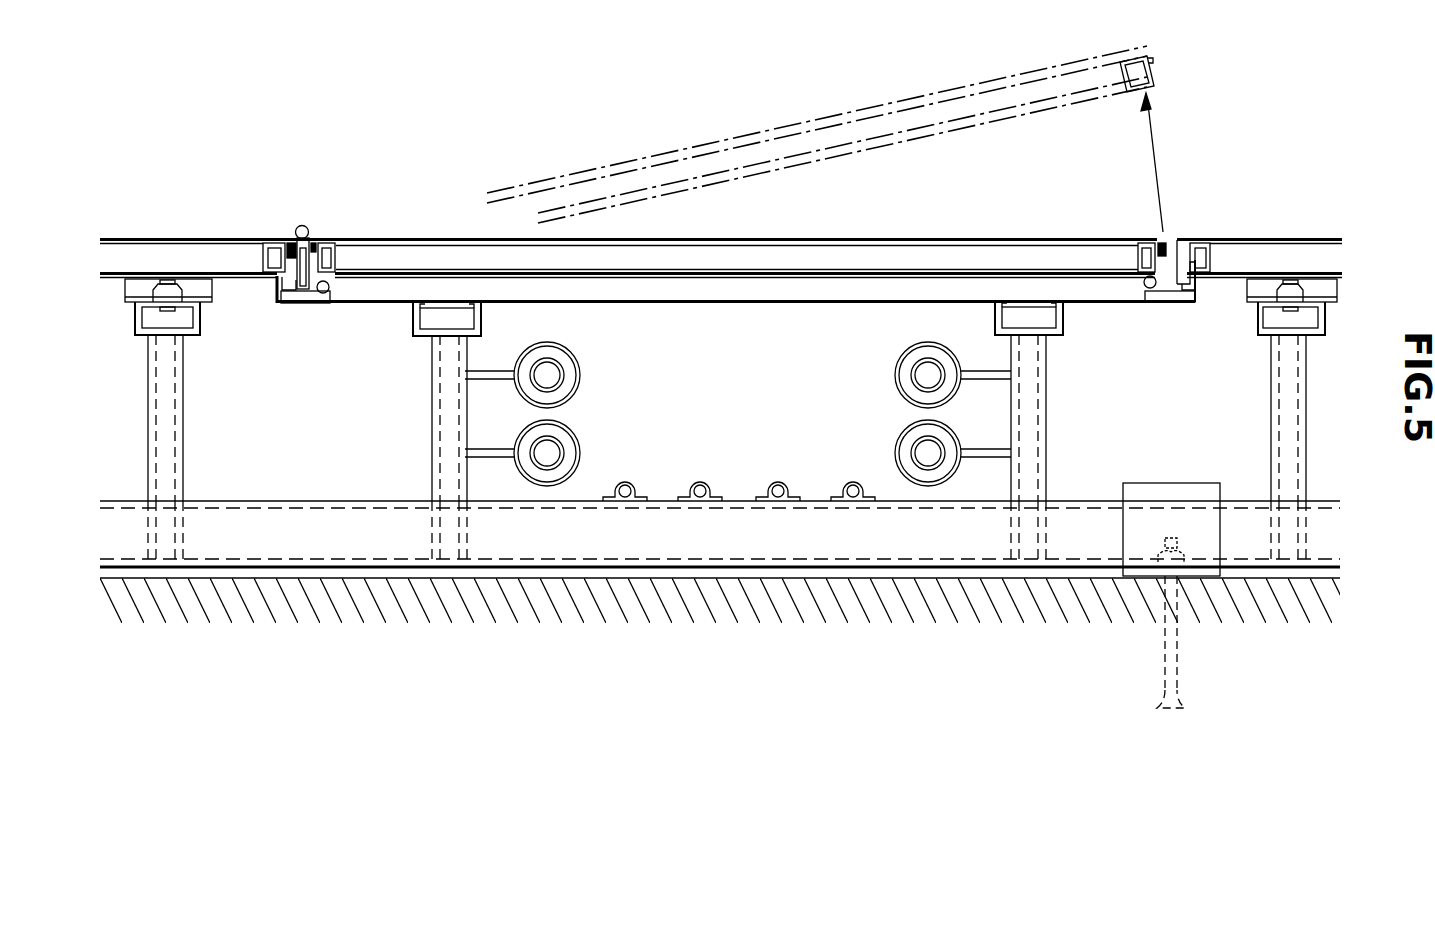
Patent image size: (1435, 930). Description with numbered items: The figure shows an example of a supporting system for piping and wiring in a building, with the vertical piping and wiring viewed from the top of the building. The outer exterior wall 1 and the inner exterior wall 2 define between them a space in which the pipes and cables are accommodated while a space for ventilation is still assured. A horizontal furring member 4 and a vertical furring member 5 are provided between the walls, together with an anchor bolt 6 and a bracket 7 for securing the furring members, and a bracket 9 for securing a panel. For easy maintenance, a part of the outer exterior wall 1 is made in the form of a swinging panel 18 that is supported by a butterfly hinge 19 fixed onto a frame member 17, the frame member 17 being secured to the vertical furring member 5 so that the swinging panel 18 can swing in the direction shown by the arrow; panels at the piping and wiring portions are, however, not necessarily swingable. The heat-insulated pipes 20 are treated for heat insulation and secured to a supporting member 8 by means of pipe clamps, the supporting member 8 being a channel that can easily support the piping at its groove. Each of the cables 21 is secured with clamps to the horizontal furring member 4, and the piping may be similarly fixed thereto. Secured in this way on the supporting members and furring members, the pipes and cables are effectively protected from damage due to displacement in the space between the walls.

The outer exterior wall 1 is at (1268, 246).
The inner exterior wall 2 is at (205, 607).
The horizontal furring member 4 is at (1092, 500).
The vertical furring member 5 is at (200, 325).
The anchor bolt 6 is at (1166, 661).
The bracket for securing the furring members 7 is at (1190, 482).
The supporting member 8 is at (433, 428).
The bracket for securing a panel 9 is at (1247, 286).
The frame member 17 is at (345, 292).
The swinging panel 18 is at (958, 121).
The butterfly hinge 19 is at (302, 226).
The heat-insulated pipes 20 is at (897, 373).
The cables 21 is at (847, 485).